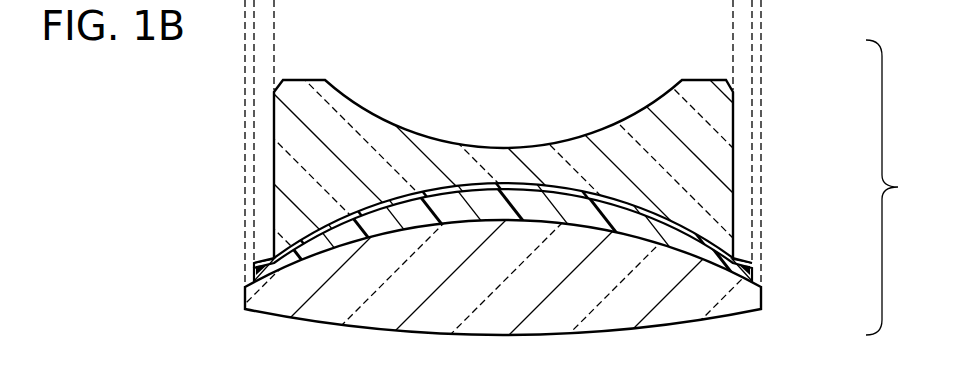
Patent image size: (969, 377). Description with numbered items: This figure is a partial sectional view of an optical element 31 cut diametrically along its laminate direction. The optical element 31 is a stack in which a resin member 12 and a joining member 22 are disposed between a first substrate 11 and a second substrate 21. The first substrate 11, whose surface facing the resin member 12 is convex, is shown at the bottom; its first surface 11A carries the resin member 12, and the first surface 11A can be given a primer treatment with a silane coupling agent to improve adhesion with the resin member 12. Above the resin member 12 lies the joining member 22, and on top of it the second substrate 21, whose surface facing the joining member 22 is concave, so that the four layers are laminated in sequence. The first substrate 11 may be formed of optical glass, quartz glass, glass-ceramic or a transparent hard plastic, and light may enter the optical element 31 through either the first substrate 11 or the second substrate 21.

The first substrate 11 is at (683, 292).
The first surface 11A is at (268, 255).
The resin member 12 is at (715, 238).
The second substrate 21 is at (639, 152).
The joining member 22 is at (687, 219).
The optical element 31 is at (903, 187).